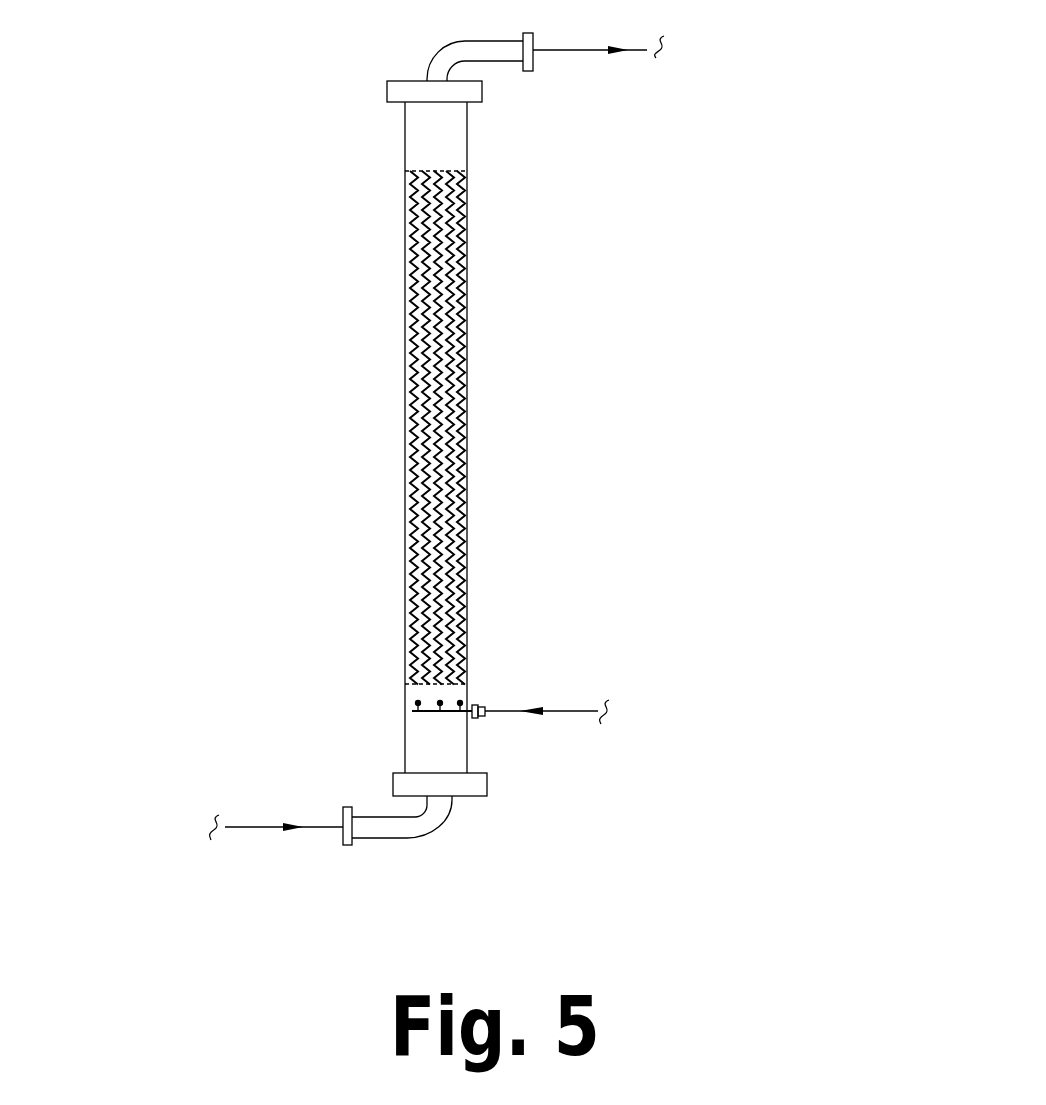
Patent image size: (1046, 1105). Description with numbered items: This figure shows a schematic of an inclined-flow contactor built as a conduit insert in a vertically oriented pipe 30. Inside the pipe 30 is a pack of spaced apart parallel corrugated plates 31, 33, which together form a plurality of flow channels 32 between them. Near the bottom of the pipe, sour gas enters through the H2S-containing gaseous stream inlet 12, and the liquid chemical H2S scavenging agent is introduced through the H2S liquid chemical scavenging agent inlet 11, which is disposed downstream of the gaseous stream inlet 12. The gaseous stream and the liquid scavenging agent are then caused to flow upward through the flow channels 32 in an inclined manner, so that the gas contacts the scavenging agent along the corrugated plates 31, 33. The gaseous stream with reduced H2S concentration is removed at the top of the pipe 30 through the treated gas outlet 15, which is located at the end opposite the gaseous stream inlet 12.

The H2S liquid chemical scavenging agent inlet 11 is at (486, 712).
The H2S-containing gaseous stream inlet 12 is at (371, 838).
The treated gas outlet 15 is at (646, 50).
The vertically oriented pipe 30 is at (407, 620).
The corrugated plate 31 is at (425, 345).
The flow channels 32 is at (415, 413).
The corrugated plate 33 is at (415, 494).